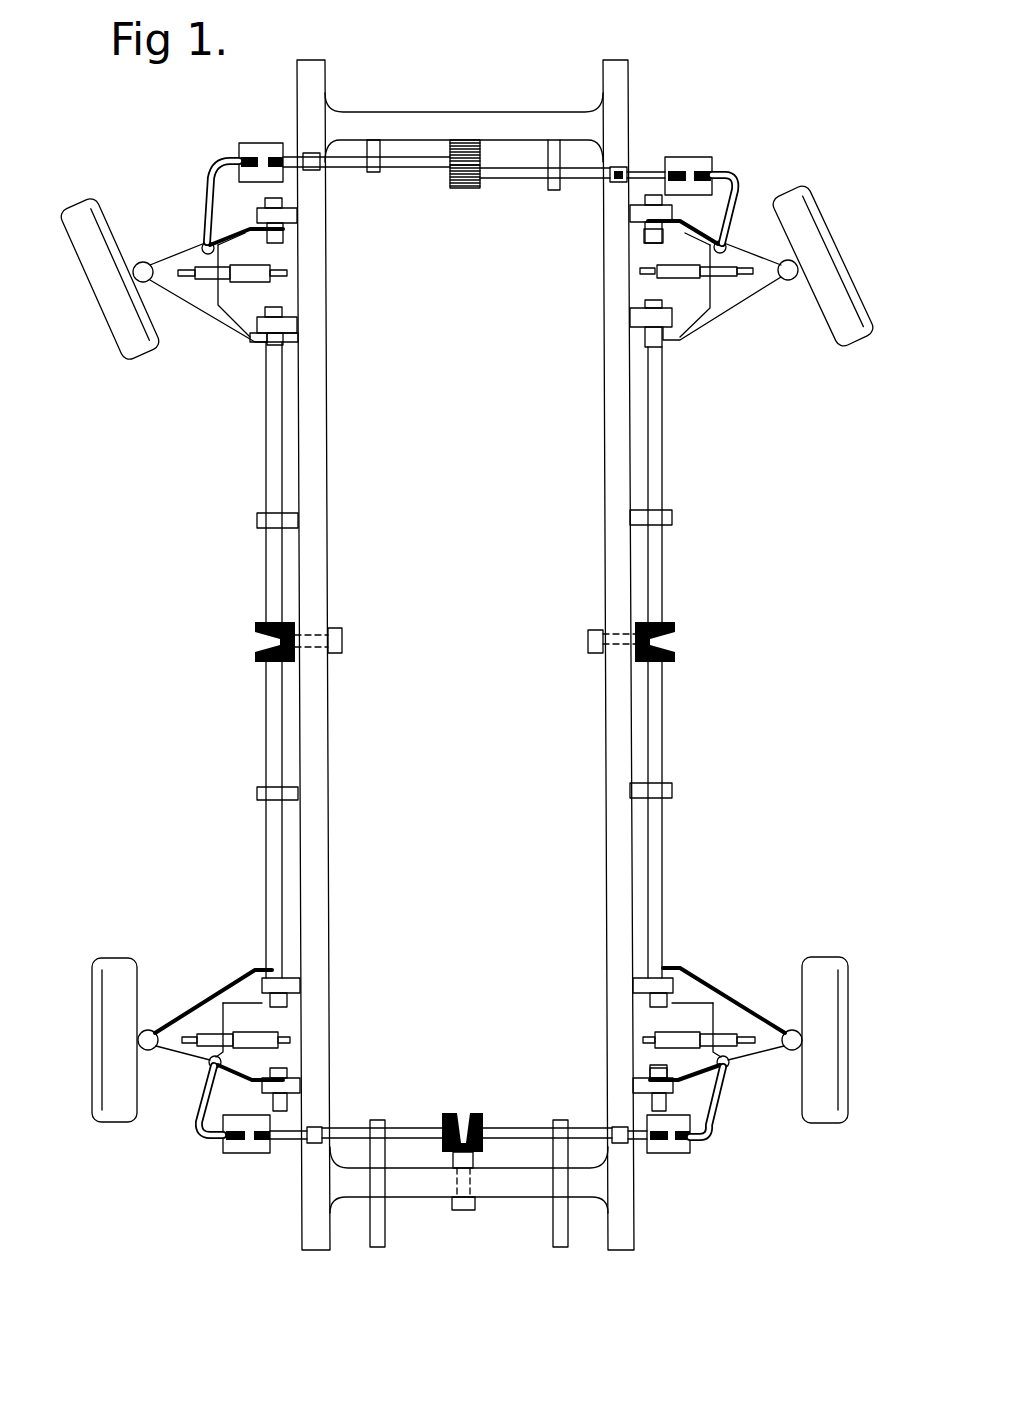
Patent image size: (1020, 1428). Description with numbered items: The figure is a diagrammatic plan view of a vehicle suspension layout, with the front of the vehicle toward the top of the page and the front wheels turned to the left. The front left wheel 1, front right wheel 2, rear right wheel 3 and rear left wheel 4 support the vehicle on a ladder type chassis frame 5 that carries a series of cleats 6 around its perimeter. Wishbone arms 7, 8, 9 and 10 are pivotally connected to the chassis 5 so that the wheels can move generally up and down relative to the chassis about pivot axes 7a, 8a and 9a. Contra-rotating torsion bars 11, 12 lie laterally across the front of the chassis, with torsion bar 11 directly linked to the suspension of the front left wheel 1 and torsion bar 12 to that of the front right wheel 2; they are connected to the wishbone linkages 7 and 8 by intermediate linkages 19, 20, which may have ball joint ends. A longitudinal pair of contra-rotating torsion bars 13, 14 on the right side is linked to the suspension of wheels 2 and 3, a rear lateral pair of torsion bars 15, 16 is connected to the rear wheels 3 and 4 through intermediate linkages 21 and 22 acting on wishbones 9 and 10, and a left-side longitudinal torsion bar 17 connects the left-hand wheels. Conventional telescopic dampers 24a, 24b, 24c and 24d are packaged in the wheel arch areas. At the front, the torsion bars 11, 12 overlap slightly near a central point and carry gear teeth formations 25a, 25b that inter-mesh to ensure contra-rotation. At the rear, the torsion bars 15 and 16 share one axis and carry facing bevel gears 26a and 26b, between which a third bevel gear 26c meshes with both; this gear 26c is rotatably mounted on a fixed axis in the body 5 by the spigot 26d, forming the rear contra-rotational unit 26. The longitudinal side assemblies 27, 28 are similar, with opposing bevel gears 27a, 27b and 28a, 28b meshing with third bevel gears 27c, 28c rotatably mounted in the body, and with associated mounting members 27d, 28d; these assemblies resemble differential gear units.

The front left wheel 1 is at (95, 213).
The front right wheel 2 is at (808, 212).
The rear right wheel 3 is at (840, 985).
The rear left wheel 4 is at (95, 985).
The ladder type chassis frame 5 is at (302, 1245).
The cleats 6 is at (262, 520).
The wishbone arm 7 is at (195, 310).
The pivot axis 7a is at (283, 238).
The wishbone arm 8 is at (735, 310).
The pivot axis 8a is at (640, 250).
The wishbone arm 9 is at (710, 1005).
The pivot axis 9a is at (645, 1065).
The wishbone arm 10 is at (190, 1005).
The torsion bar 11 is at (405, 170).
The torsion bar 12 is at (520, 185).
The torsion bar 13 is at (660, 497).
The torsion bar 14 is at (660, 862).
The torsion bar 15 is at (520, 1130).
The torsion bar 16 is at (400, 1130).
The torsion bar 17 is at (283, 835).
The intermediate linkage 19 is at (217, 183).
The intermediate linkage 20 is at (737, 177).
The intermediate linkage 21 is at (713, 1150).
The intermediate linkage 22 is at (208, 1135).
The telescopic damper 24a is at (255, 285).
The telescopic damper 24b is at (680, 282).
The telescopic damper 24c is at (705, 1060).
The telescopic damper 24d is at (240, 1030).
The gear teeth formation 25a is at (465, 140).
The gear teeth formation 25b is at (470, 188).
The rear coupling 26 is at (472, 1115).
The bevel gear 26a is at (485, 1110).
The bevel gear 26b is at (453, 1110).
The third bevel gear 26c is at (458, 1152).
The spigot 26d is at (470, 1185).
The contra-rotational assembly 27 is at (664, 633).
The bevel gear 27a is at (670, 622).
The bevel gear 27b is at (672, 660).
The third bevel gear 27c is at (630, 622).
The right coupling control unit 27d is at (597, 655).
The contra-rotational assembly 28 is at (274, 634).
The bevel gear 28a is at (262, 622).
The bevel gear 28b is at (255, 660).
The third bevel gear 28c is at (300, 625).
The left coupling control unit 28d is at (340, 652).